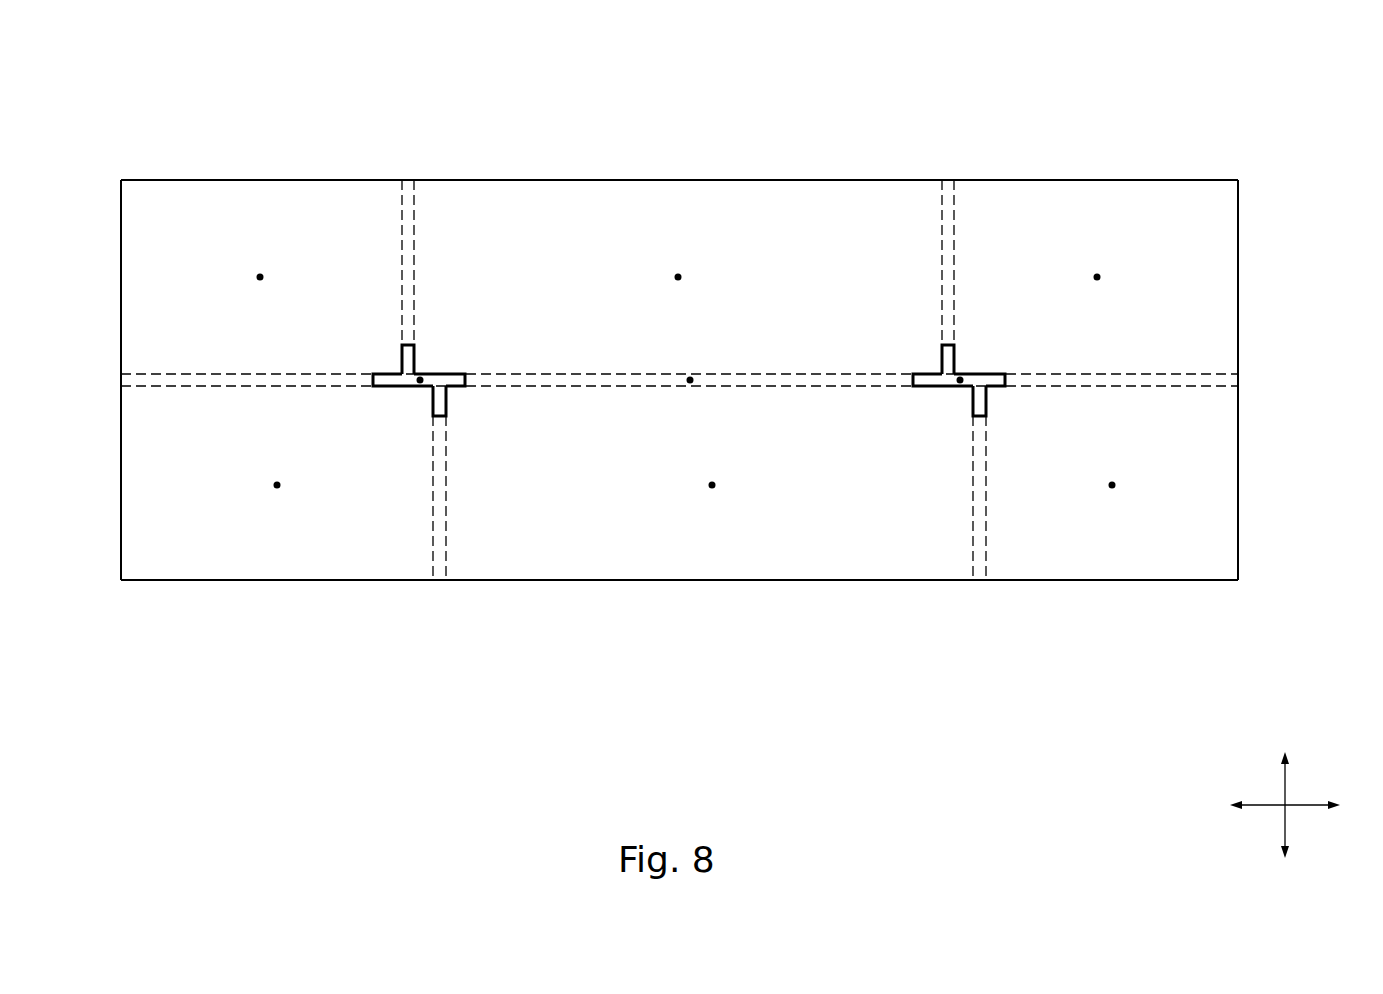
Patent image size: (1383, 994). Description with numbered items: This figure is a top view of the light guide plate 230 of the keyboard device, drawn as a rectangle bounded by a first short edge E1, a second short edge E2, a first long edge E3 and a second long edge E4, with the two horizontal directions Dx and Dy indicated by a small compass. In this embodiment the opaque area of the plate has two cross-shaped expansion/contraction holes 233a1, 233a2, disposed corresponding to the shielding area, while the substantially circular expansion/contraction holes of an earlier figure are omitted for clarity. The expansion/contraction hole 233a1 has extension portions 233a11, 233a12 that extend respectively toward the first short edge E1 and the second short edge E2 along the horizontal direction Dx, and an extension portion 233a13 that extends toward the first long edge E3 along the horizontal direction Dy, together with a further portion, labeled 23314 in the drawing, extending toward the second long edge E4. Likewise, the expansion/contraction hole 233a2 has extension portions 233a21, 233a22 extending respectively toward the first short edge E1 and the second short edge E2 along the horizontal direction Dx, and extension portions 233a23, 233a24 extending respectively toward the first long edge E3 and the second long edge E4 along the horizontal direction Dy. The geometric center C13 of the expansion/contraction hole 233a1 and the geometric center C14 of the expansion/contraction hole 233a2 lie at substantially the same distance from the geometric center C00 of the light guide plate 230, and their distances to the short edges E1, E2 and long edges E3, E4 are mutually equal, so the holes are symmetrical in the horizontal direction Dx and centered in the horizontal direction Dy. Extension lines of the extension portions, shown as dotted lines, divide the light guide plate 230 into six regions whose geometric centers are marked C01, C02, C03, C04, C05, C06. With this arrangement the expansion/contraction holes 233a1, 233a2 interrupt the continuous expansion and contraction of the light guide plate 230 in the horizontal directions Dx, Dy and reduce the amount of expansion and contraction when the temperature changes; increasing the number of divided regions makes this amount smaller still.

The light guide plate 230 is at (62, 85).
The first short edge E1 is at (1238, 280).
The second short edge E2 is at (121, 288).
The first long edge E3 is at (797, 180).
The second long edge E4 is at (827, 580).
The expansion/contraction hole 233a1 is at (461, 380).
The extension portion 233a11 is at (468, 380).
The extension portion 233a12 is at (401, 388).
The extension portion 233a13 is at (398, 347).
The fourth portion of first branch electrode 23314 is at (447, 418).
The expansion/contraction hole 233a2 is at (1019, 383).
The extension portion 233a21 is at (1008, 380).
The extension portion 233a22 is at (941, 388).
The extension portion 233a23 is at (938, 347).
The extension portion 233a24 is at (987, 418).
The geometric center C00 is at (690, 382).
The geometric center C01 is at (260, 275).
The geometric center C02 is at (678, 275).
The geometric center C03 is at (1097, 275).
The geometric center C04 is at (277, 487).
The geometric center C05 is at (712, 487).
The geometric center C06 is at (1112, 487).
The geometric center C13 is at (422, 376).
The geometric center C14 is at (962, 376).
The horizontal direction Dx is at (1283, 807).
The horizontal direction Dy is at (1286, 803).